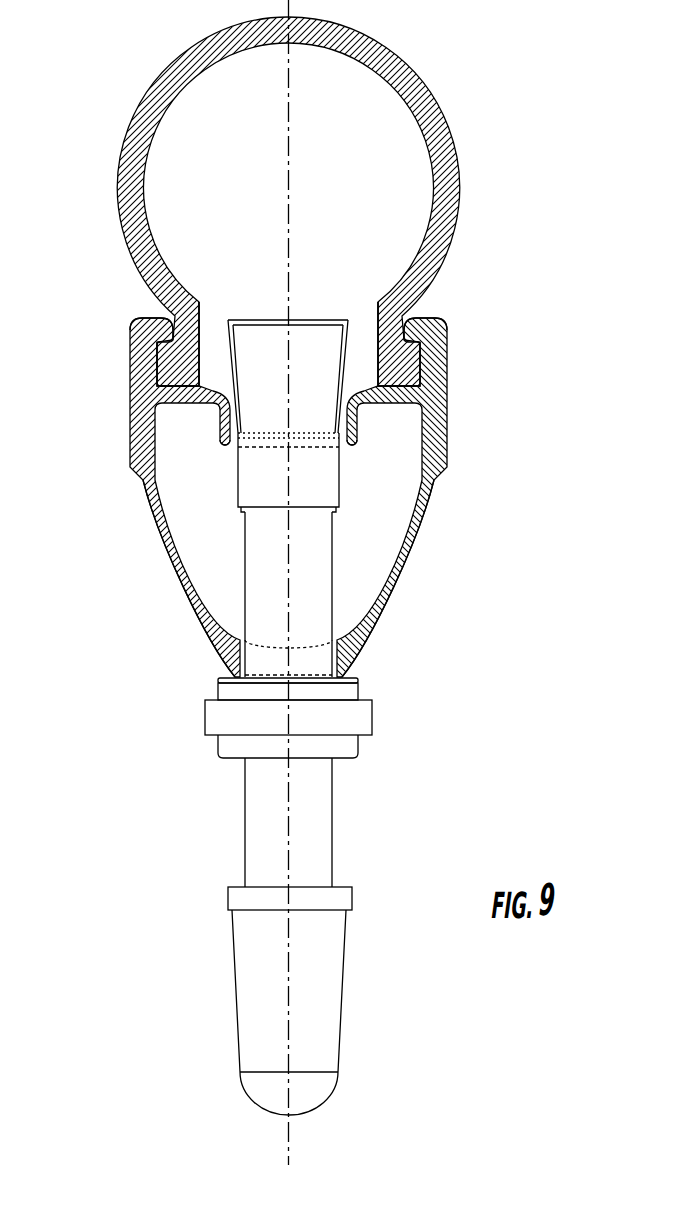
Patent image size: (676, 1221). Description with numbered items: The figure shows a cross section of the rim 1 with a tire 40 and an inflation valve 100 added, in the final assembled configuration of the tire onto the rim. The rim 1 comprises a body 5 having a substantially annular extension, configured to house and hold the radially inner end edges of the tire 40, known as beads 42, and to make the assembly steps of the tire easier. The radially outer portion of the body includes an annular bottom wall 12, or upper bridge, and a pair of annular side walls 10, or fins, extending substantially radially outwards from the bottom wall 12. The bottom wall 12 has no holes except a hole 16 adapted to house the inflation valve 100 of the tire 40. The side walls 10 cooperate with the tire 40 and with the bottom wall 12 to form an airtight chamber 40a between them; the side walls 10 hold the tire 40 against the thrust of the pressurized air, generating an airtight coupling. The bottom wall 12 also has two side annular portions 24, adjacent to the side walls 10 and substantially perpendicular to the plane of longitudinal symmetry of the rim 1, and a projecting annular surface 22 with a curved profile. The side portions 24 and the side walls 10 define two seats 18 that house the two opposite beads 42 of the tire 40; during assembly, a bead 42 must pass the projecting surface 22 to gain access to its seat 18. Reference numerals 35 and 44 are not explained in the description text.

The rim 1 is at (301, 582).
The body 5 is at (449, 467).
The annular side walls 10 is at (130, 402).
The annular bottom wall 12 is at (346, 458).
The hole 16 is at (226, 449).
The seats 18 is at (206, 318).
The projecting annular surface 22 is at (237, 367).
The side annular portions 24 is at (210, 335).
The seal lip 35 is at (358, 449).
The tire 40 is at (439, 107).
The airtight chamber 40a is at (327, 116).
The beads 42 is at (155, 356).
The connector 44 is at (288, 324).
The inflation valve 100 is at (335, 579).